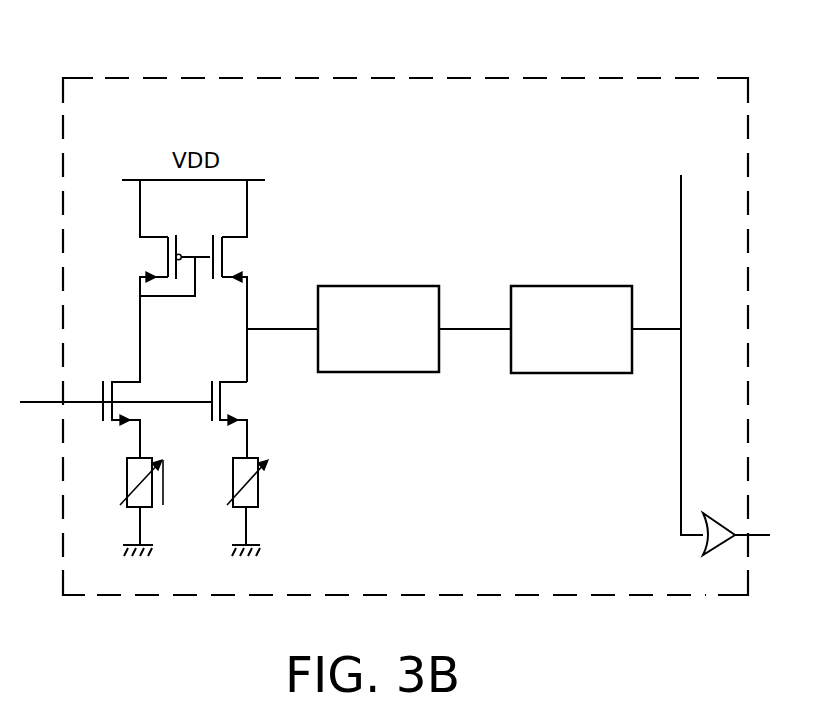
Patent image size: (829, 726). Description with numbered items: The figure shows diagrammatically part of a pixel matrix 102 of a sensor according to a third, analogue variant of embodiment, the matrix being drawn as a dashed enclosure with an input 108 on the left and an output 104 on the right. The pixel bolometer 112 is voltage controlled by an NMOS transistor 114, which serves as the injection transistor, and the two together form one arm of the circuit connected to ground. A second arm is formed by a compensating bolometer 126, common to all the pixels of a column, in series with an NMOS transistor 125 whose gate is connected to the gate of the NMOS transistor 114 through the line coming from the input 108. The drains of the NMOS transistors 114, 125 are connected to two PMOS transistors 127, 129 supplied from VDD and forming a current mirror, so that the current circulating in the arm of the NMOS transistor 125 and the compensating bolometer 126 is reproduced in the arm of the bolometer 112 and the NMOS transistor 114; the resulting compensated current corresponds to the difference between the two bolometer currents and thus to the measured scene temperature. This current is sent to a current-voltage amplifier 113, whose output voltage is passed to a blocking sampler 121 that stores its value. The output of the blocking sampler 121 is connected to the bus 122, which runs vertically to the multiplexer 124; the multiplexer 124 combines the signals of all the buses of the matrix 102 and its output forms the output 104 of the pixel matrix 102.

The pixel matrix 102 is at (583, 90).
The output 104 is at (753, 537).
The input terminal 108 is at (35, 403).
The bolometer 112 is at (247, 497).
The current-voltage amplifier 113 is at (390, 363).
The NMOS transistor 114 is at (235, 382).
The blocking sampler 121 is at (584, 364).
The bus 122 is at (681, 500).
The multiplexer 124 is at (715, 530).
The NMOS transistor 125 is at (126, 382).
The compensating bolometer 126 is at (143, 493).
The PMOS transistor 127 is at (233, 237).
The PMOS transistor 129 is at (153, 237).